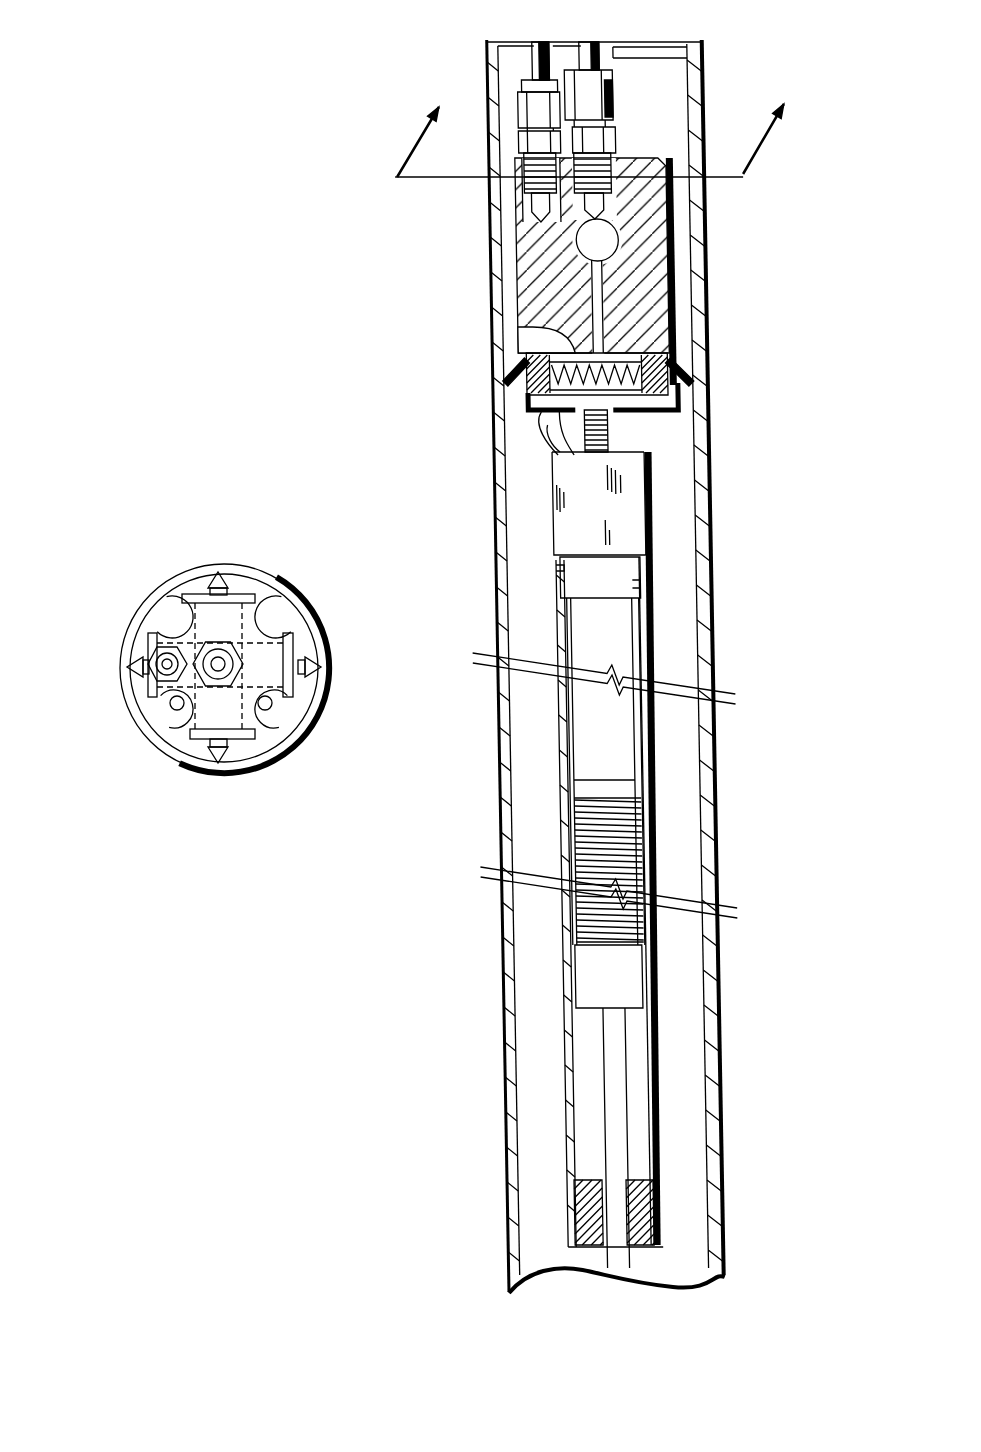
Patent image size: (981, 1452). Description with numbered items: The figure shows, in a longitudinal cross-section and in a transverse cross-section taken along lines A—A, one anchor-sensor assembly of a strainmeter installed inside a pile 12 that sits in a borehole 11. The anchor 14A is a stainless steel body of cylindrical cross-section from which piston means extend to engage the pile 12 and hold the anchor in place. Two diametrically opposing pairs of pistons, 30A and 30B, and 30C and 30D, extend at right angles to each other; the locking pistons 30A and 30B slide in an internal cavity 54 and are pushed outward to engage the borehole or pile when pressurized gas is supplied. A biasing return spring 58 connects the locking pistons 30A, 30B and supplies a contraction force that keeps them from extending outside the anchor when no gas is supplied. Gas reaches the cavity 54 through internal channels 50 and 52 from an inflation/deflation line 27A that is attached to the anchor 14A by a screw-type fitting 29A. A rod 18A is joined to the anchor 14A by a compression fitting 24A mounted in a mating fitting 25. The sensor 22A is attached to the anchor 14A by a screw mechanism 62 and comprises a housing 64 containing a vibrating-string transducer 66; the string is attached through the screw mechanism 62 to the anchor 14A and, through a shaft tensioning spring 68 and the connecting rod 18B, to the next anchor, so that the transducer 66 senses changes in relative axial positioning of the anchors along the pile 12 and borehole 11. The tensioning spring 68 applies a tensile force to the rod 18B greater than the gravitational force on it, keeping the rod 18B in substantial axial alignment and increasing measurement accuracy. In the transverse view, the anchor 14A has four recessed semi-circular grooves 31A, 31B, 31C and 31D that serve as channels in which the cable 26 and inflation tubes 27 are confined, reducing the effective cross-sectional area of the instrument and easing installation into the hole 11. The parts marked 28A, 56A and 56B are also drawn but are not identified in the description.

In FIG. 3, the borehole 11 is at (170, 590).
In FIG. 2, the borehole 11 is at (520, 717).
In FIG. 3, the pile 12 is at (152, 587).
In FIG. 2, the pile 12 is at (487, 788).
In FIG. 3, the anchor 14A is at (238, 583).
In FIG. 2, the anchor 14A is at (678, 233).
In FIG. 2, the rod 18A is at (700, 52).
In FIG. 2, the connecting rod 18B is at (620, 1264).
In FIG. 2, the sensor 22A is at (650, 516).
In FIG. 3, the compression fitting 24A is at (219, 682).
In FIG. 2, the compression fitting 24A is at (609, 94).
In FIG. 2, the mating fitting 25 is at (672, 183).
In FIG. 3, the cable 26 is at (178, 760).
In FIG. 3, the inflation tubes 27 is at (268, 757).
In FIG. 2, the inflation/deflation line 27A is at (499, 82).
In FIG. 2, the passage 28A is at (545, 446).
In FIG. 3, the screw-type fitting 29A is at (150, 680).
In FIG. 2, the screw-type fitting 29A is at (516, 98).
In FIG. 3, the locking piston 30A is at (130, 660).
In FIG. 2, the locking piston 30A is at (500, 372).
In FIG. 3, the locking piston 30B is at (298, 657).
In FIG. 2, the locking piston 30B is at (683, 390).
In FIG. 3, the piston 30C is at (203, 567).
In FIG. 3, the piston 30D is at (232, 758).
In FIG. 3, the recessed semi-circular groove 31A is at (160, 704).
In FIG. 3, the recessed semi-circular groove 31B is at (160, 632).
In FIG. 3, the recessed semi-circular groove 31C is at (262, 625).
In FIG. 3, the recessed semi-circular groove 31D is at (284, 705).
In FIG. 2, the internal channel 50 is at (546, 203).
In FIG. 2, the internal channel 52 is at (570, 247).
In FIG. 2, the internal cavity 54 is at (568, 347).
In FIG. 2, the bracket 56A is at (520, 394).
In FIG. 2, the bracket 56B is at (684, 372).
In FIG. 2, the biasing return spring mechanism 58 is at (602, 425).
In FIG. 2, the screw mechanism 62 is at (640, 453).
In FIG. 2, the housing 64 is at (645, 655).
In FIG. 2, the vibrating-string transducer 66 is at (606, 622).
In FIG. 2, the tensioning spring 68 is at (605, 843).